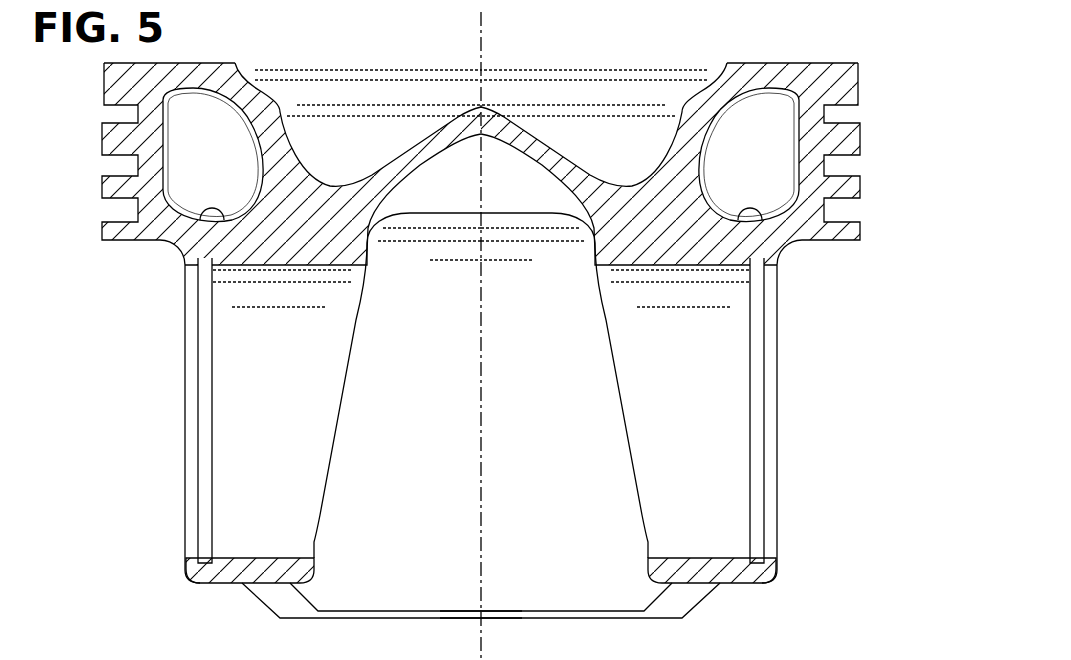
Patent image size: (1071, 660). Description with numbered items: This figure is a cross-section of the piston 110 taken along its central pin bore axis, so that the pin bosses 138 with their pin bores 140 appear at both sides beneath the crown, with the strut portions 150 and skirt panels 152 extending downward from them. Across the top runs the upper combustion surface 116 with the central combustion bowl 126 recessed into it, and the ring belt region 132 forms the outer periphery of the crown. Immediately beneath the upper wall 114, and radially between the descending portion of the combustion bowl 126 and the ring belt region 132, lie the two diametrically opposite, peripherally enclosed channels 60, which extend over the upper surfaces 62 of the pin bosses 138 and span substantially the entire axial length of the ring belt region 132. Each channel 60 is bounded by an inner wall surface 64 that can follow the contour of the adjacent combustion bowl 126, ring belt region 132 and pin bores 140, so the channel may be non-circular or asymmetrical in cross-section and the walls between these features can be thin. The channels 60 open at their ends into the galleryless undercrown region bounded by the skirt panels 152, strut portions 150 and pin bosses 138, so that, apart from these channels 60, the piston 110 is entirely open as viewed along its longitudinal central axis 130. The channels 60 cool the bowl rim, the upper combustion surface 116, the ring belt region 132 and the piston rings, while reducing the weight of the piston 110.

The channels 60 is at (197, 182).
The upper surfaces of the pin bosses 62 is at (207, 213).
The inner wall surface 64 is at (249, 151).
The piston 110 is at (825, 50).
The upper wall 114 is at (762, 77).
The upper combustion surface 116 is at (195, 63).
The combustion bowl 126 is at (618, 90).
The longitudinal central axis 130 is at (487, 453).
The ring belt region 132 is at (868, 63).
The pin bosses 138 is at (203, 586).
The pin bores 140 is at (222, 557).
The strut portions 150 is at (250, 600).
The skirt panels 152 is at (547, 620).